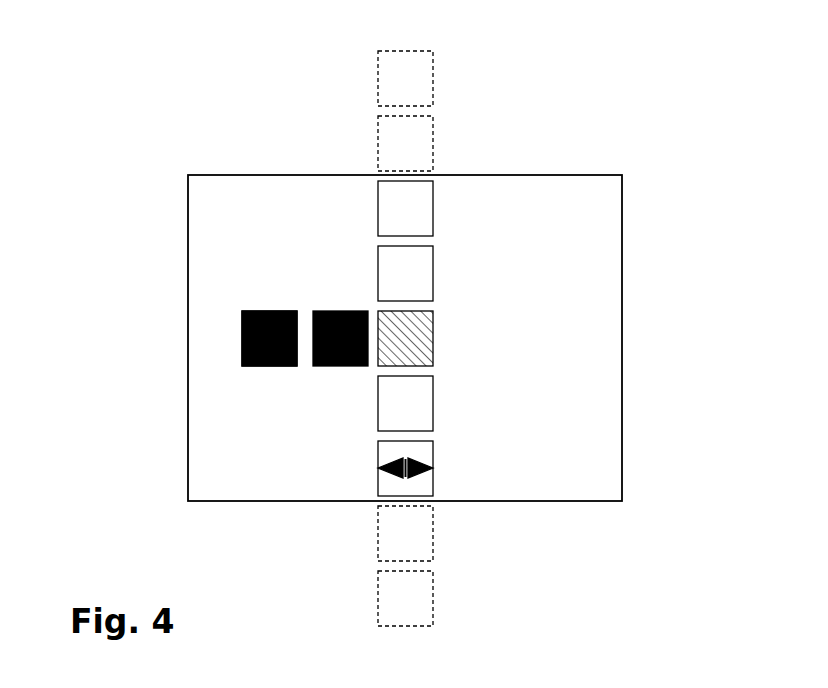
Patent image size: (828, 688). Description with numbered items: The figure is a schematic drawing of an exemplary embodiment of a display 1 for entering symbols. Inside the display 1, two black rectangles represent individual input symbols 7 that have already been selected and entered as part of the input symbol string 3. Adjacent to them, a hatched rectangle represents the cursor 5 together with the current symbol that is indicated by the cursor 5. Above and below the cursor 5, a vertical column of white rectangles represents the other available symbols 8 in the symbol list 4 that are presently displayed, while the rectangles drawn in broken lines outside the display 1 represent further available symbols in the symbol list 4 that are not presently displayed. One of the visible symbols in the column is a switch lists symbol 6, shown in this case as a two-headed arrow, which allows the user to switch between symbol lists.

The display 1 is at (622, 312).
The input symbol string 3 is at (250, 393).
The symbol list 4 is at (456, 118).
The cursor 5 is at (433, 338).
The switch lists symbol 6 is at (433, 468).
The input symbols 7 is at (264, 311).
The other available symbols 8 is at (433, 262).